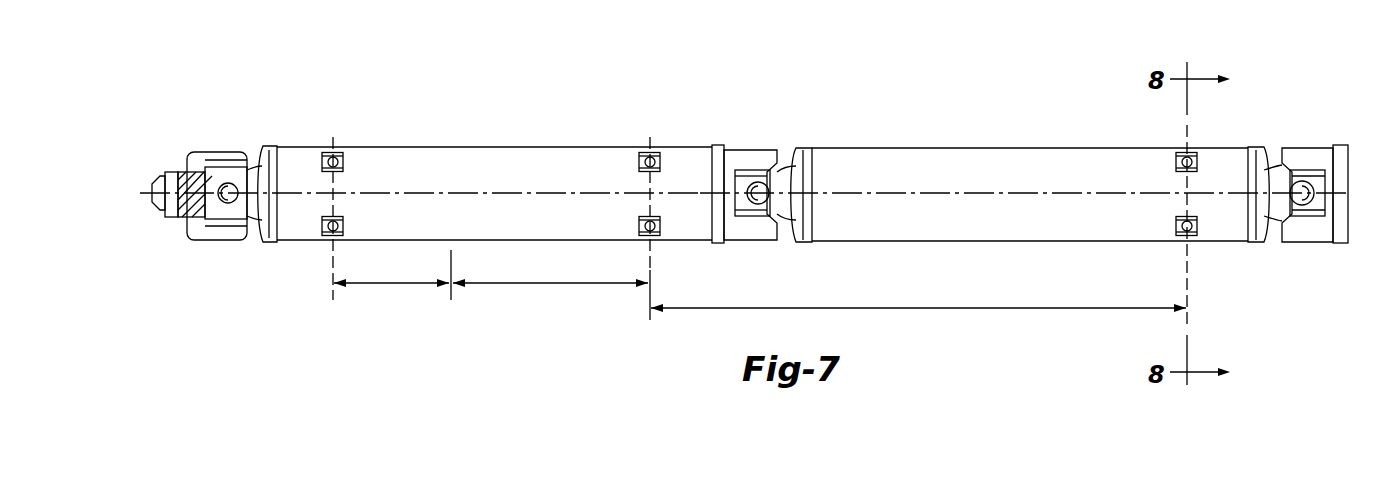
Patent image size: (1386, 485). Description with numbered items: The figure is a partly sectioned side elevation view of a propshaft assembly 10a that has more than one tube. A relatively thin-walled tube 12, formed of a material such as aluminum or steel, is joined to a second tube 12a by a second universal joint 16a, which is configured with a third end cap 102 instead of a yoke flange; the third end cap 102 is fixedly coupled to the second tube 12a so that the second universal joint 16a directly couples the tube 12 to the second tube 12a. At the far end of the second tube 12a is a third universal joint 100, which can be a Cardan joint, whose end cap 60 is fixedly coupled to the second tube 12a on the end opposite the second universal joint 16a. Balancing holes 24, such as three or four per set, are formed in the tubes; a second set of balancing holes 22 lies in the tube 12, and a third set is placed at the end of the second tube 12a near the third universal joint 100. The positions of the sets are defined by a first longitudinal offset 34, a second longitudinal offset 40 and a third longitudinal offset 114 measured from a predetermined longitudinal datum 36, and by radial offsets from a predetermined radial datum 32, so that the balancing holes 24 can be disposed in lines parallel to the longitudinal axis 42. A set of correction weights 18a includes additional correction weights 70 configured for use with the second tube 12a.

The propshaft assembly 10a is at (542, 88).
The tube 12 is at (298, 147).
The second tube 12a is at (1040, 149).
The second universal joint 16a is at (760, 144).
The set of correction weights 18a is at (297, 243).
The second set of balancing holes 22 is at (352, 218).
The balancing holes 24 is at (633, 156).
The predetermined radial datum 32 is at (947, 193).
The longitudinal axis 42 is at (1024, 140).
The first longitudinal offset 34 is at (390, 286).
The predetermined longitudinal datum 36 is at (452, 286).
The second longitudinal offset 40 is at (553, 286).
The end cap 60 is at (1258, 246).
The correction weights 70 is at (1177, 160).
The third universal joint 100 is at (1278, 140).
The third end cap 102 is at (800, 150).
The third longitudinal offset 114 is at (1000, 310).